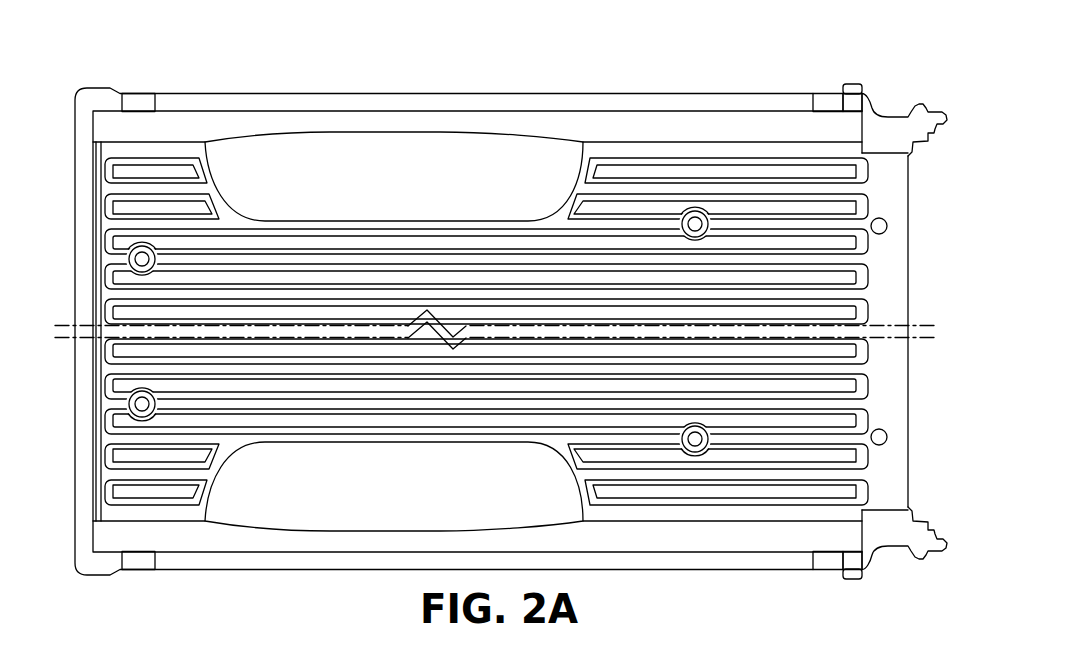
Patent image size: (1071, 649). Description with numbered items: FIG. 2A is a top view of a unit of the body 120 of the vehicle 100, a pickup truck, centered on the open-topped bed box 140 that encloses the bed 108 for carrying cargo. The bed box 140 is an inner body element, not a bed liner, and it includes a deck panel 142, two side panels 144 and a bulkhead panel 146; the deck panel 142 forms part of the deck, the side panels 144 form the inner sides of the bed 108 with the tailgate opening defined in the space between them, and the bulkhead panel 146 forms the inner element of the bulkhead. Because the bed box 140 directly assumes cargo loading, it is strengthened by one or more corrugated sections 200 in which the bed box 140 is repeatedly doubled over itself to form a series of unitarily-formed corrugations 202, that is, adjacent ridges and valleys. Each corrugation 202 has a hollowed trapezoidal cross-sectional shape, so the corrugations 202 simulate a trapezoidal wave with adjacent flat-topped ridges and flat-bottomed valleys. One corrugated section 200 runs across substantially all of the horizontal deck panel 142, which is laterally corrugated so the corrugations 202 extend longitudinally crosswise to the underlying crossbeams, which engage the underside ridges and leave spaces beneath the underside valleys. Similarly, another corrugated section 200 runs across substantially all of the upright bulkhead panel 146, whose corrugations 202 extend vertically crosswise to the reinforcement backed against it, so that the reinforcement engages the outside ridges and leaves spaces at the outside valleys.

The vehicle 100 is at (98, 90).
The bed 108 is at (183, 90).
The body 120 is at (259, 90).
The bed box 140 is at (342, 93).
The deck panel 142 is at (620, 143).
The side panels 144 is at (405, 93).
The bulkhead panel 146 is at (75, 389).
The corrugated section 200 is at (643, 160).
The corrugations 202 is at (665, 173).